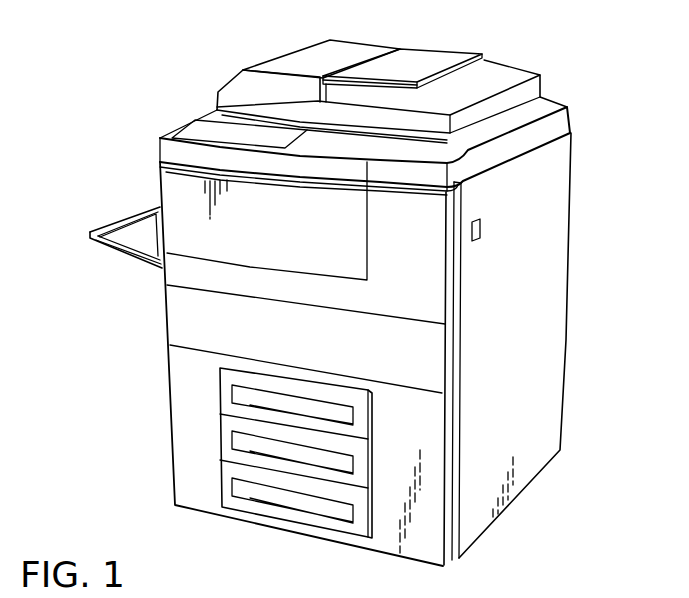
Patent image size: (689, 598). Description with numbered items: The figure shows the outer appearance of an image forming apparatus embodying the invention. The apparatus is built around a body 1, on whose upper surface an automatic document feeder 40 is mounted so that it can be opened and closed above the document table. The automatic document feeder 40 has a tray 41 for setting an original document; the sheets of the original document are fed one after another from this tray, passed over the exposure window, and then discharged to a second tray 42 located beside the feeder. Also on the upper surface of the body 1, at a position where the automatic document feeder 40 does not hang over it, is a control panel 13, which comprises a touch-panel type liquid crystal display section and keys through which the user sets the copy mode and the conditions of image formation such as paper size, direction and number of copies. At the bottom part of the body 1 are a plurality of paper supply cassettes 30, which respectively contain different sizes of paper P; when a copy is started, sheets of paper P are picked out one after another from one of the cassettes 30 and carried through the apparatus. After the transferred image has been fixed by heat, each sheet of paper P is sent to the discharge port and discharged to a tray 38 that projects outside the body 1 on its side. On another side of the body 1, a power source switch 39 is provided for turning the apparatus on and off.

The body 1 is at (573, 160).
The control panel 13 is at (193, 133).
The paper supply cassettes 30 is at (221, 393).
The tray 38 is at (143, 266).
The power source switch 39 is at (480, 227).
The automatic document feeder 40 is at (377, 50).
The tray 41 is at (455, 58).
The tray 42 is at (502, 73).
The paper P is at (136, 230).